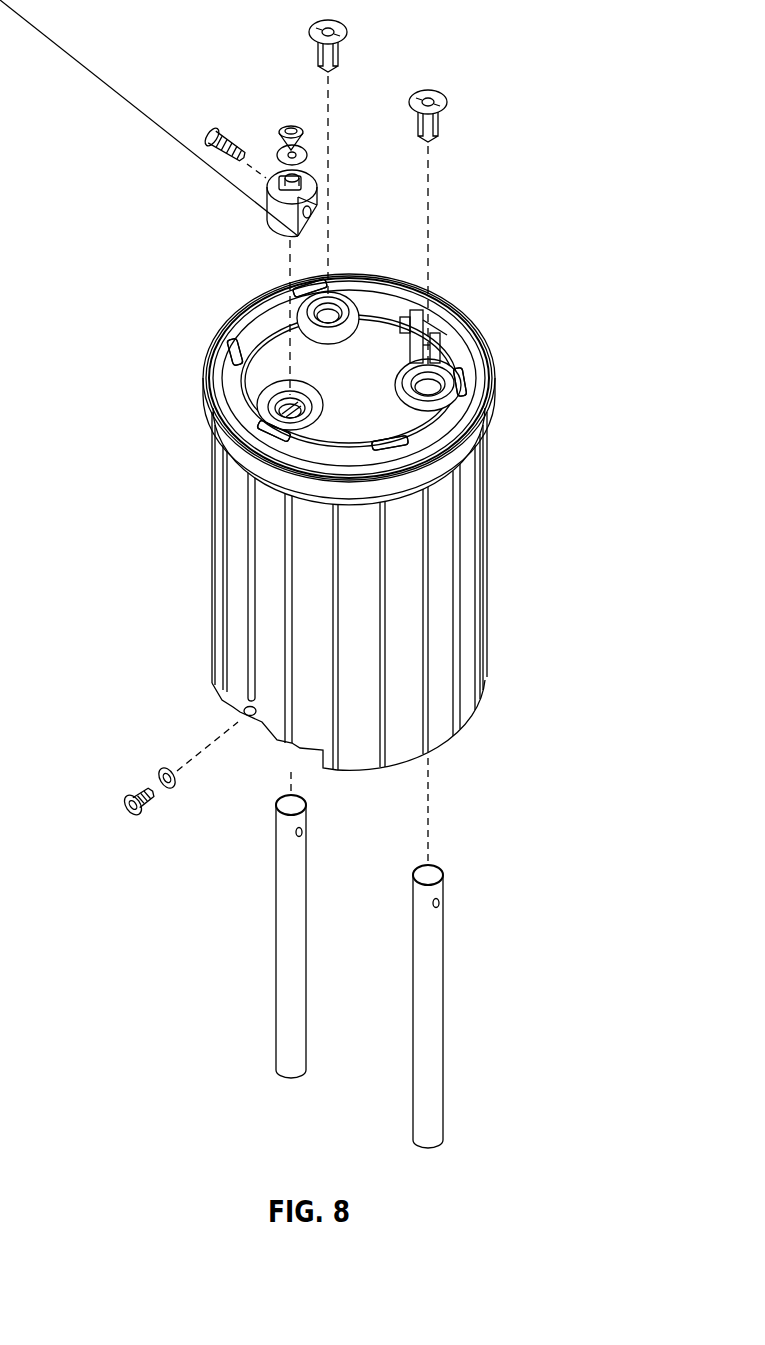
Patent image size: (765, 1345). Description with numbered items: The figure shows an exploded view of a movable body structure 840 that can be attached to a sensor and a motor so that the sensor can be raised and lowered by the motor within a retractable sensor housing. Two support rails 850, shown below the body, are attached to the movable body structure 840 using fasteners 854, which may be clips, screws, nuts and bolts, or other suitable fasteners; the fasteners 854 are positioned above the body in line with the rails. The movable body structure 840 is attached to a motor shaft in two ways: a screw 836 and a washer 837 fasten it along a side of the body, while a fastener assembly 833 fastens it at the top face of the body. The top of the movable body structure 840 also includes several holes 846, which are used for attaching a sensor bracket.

The fastener assembly 833 is at (266, 208).
The screw 836 is at (125, 805).
The washer 837 is at (160, 773).
The movable body structure 840 is at (483, 479).
The holes 846 is at (308, 286).
The support rails 850 is at (276, 934).
The fasteners 854 is at (345, 28).